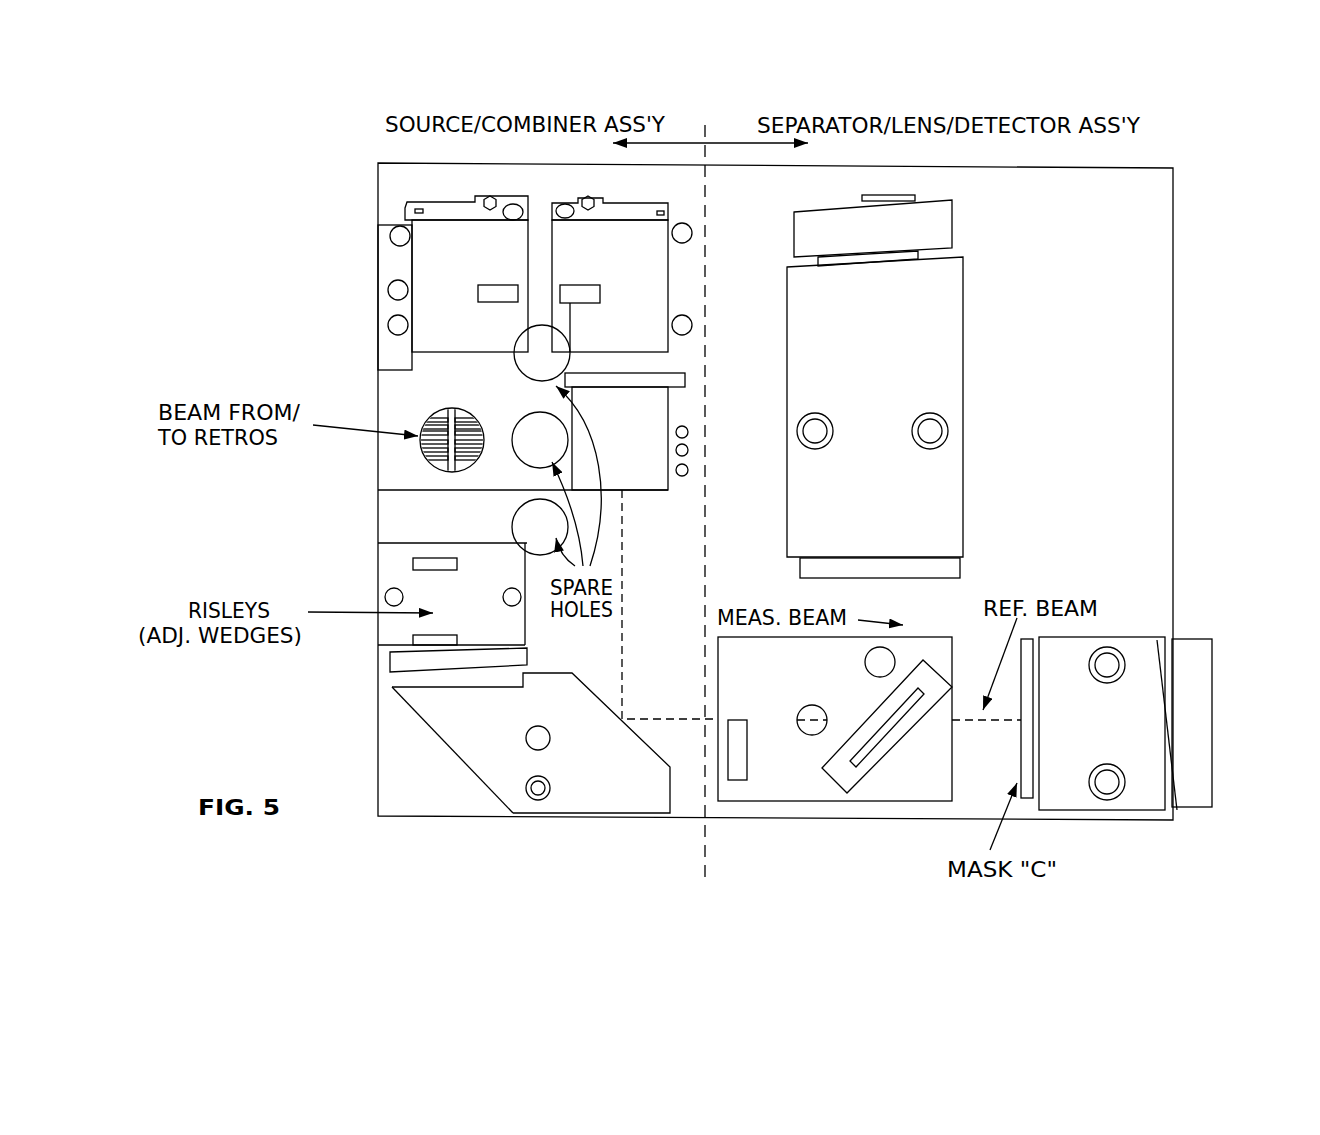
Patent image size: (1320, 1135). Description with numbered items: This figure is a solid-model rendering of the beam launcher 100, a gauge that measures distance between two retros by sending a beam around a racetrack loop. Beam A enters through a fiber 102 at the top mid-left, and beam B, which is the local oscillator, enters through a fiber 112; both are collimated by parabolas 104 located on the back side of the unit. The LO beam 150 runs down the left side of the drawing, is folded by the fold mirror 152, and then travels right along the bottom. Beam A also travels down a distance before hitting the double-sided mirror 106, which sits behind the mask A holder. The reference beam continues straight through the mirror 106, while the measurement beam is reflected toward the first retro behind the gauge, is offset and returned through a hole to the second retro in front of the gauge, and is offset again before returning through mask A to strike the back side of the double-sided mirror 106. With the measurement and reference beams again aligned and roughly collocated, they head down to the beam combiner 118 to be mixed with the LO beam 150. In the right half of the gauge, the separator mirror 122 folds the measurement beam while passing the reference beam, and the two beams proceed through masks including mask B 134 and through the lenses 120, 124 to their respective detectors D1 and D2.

The beam launcher 100 is at (1217, 163).
The fiber 102 is at (573, 257).
The parabolas 104 is at (386, 297).
The double-sided mirror 106 is at (566, 428).
The fiber 112 is at (457, 275).
The beam combiner 118 is at (641, 767).
The lens 120 is at (935, 368).
The separator mirror 122 is at (913, 747).
The lens 124 is at (1177, 743).
The mask B 134 is at (965, 558).
The LO beam 150 is at (411, 510).
The fold mirror 152 is at (419, 795).